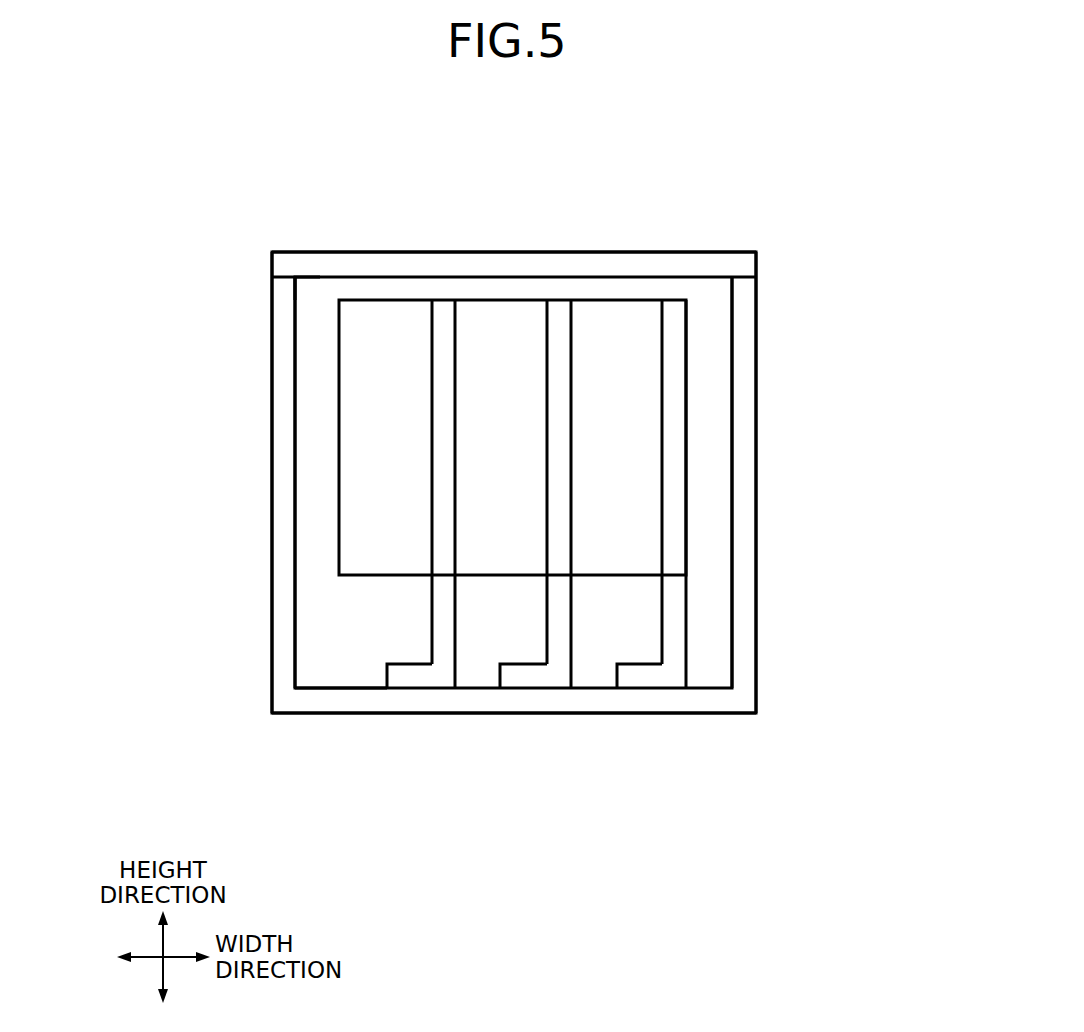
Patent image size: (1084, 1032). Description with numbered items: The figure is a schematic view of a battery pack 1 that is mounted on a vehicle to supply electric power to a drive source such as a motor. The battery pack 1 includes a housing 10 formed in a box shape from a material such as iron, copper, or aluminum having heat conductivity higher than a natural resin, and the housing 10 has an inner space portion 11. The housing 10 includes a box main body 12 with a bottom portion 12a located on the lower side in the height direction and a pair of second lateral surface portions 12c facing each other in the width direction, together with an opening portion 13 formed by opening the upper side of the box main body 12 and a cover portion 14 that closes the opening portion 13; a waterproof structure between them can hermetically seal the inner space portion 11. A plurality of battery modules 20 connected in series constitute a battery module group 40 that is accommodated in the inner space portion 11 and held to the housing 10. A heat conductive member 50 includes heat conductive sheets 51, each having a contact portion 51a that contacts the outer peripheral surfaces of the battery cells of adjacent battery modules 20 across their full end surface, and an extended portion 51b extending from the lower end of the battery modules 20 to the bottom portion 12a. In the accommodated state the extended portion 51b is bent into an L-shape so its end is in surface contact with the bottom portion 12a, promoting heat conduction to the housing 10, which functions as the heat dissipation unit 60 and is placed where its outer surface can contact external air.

The battery pack 1 is at (700, 197).
The housing 10 is at (425, 248).
The inner space portion 11 is at (329, 642).
The box main body 12 is at (756, 397).
The bottom portion 12a is at (338, 688).
The second lateral surface portions 12c is at (272, 326).
The opening portion 13 is at (298, 279).
The cover portion 14 is at (598, 238).
The battery modules 20 is at (600, 387).
The battery module group 40 is at (507, 285).
The heat conductive member 50 is at (742, 922).
The heat conductive sheet 51 is at (435, 872).
The contact portion 51a is at (455, 510).
The extended portion 51b is at (455, 655).
The heat dissipation unit 60 is at (407, 714).